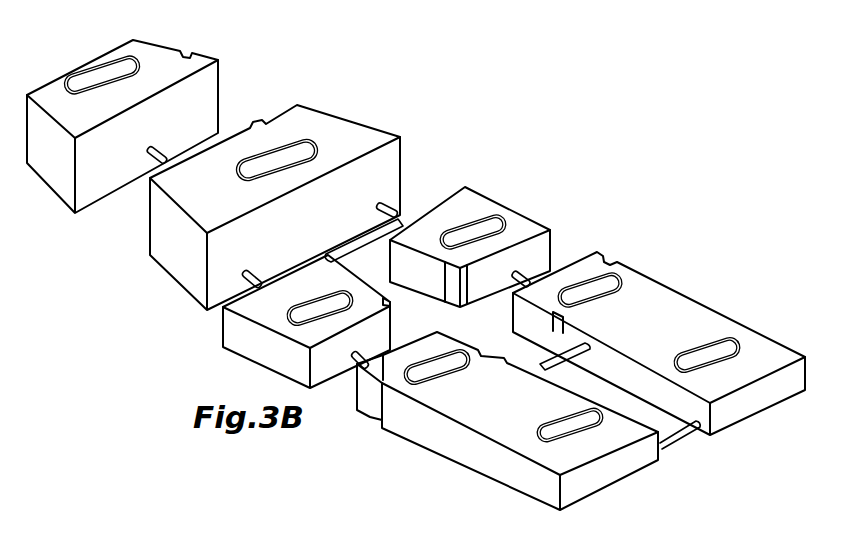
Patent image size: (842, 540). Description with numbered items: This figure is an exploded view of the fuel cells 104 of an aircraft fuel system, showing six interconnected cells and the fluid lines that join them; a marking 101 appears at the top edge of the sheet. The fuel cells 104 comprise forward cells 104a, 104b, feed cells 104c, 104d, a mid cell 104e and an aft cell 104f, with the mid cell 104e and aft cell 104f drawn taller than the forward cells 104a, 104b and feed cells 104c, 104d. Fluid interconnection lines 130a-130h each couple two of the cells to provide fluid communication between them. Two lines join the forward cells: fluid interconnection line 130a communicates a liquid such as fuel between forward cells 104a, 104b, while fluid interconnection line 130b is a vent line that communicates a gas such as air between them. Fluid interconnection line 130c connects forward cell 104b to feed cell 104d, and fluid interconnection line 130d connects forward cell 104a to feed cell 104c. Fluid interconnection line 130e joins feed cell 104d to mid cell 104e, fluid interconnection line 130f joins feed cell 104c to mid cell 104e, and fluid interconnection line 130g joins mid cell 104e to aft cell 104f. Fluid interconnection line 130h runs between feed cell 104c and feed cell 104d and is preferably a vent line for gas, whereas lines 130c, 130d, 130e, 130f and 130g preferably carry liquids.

The system 101 is at (609, 3).
The fuel cells 104 is at (375, 121).
The forward cell 104a is at (450, 445).
The forward cell 104b is at (673, 310).
The feed cell 104c is at (250, 348).
The feed cell 104d is at (485, 205).
The mid cell 104e is at (275, 185).
The aft cell 104f is at (148, 62).
The fluid interconnection line 130a is at (675, 440).
The fluid interconnection line 130b is at (545, 360).
The fluid interconnection line 130c is at (530, 272).
The fluid interconnection line 130d is at (356, 372).
The fluid interconnection line 130e is at (393, 202).
The fluid interconnection line 130f is at (245, 278).
The fluid interconnection line 130g is at (147, 160).
The fluid interconnection line 130h is at (357, 250).